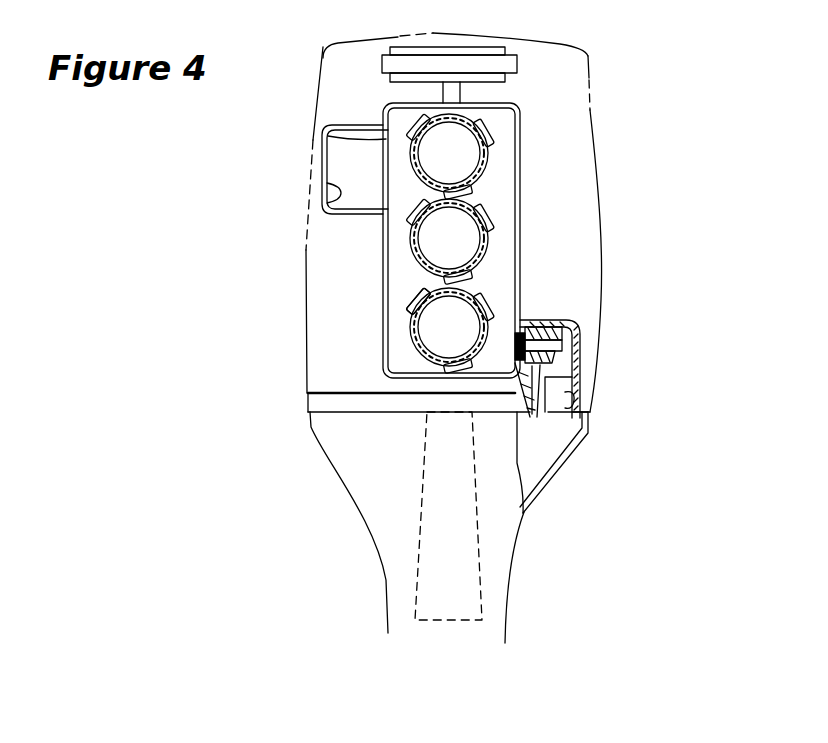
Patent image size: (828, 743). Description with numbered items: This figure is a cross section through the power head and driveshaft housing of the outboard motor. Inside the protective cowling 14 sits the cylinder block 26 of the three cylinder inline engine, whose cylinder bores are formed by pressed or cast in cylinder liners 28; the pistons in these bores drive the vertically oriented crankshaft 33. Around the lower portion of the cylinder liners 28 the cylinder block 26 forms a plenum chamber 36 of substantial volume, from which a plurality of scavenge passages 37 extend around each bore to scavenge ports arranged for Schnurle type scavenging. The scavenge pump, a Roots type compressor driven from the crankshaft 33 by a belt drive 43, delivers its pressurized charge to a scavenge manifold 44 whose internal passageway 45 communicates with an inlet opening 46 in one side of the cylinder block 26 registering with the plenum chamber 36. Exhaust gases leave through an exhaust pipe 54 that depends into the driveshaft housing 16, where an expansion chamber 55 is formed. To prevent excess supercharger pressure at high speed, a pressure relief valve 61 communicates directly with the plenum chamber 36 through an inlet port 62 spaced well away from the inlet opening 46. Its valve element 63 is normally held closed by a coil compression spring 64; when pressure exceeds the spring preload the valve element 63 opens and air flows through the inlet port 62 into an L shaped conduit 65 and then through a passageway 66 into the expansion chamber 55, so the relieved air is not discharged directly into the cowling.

The protective cowling 14 is at (592, 78).
The driveshaft housing 16 is at (543, 577).
The cylinder block 26 is at (383, 325).
The cylinder liners 28 is at (487, 172).
The crankshaft 33 is at (460, 90).
The plenum chamber 36 is at (416, 287).
The scavenge passages 37 is at (422, 118).
The belt drive 43 is at (520, 67).
The scavenge manifold 44 is at (322, 209).
The internal passageway 45 is at (370, 182).
The inlet opening 46 is at (327, 132).
The exhaust pipe 54 is at (418, 562).
The expansion chamber 55 is at (550, 478).
The pressure relief valve 61 is at (580, 392).
The inlet port 62 is at (536, 412).
The valve element 63 is at (568, 347).
The coil compression spring 64 is at (530, 322).
The L shaped conduit 65 is at (555, 368).
The passageway 66 is at (572, 447).